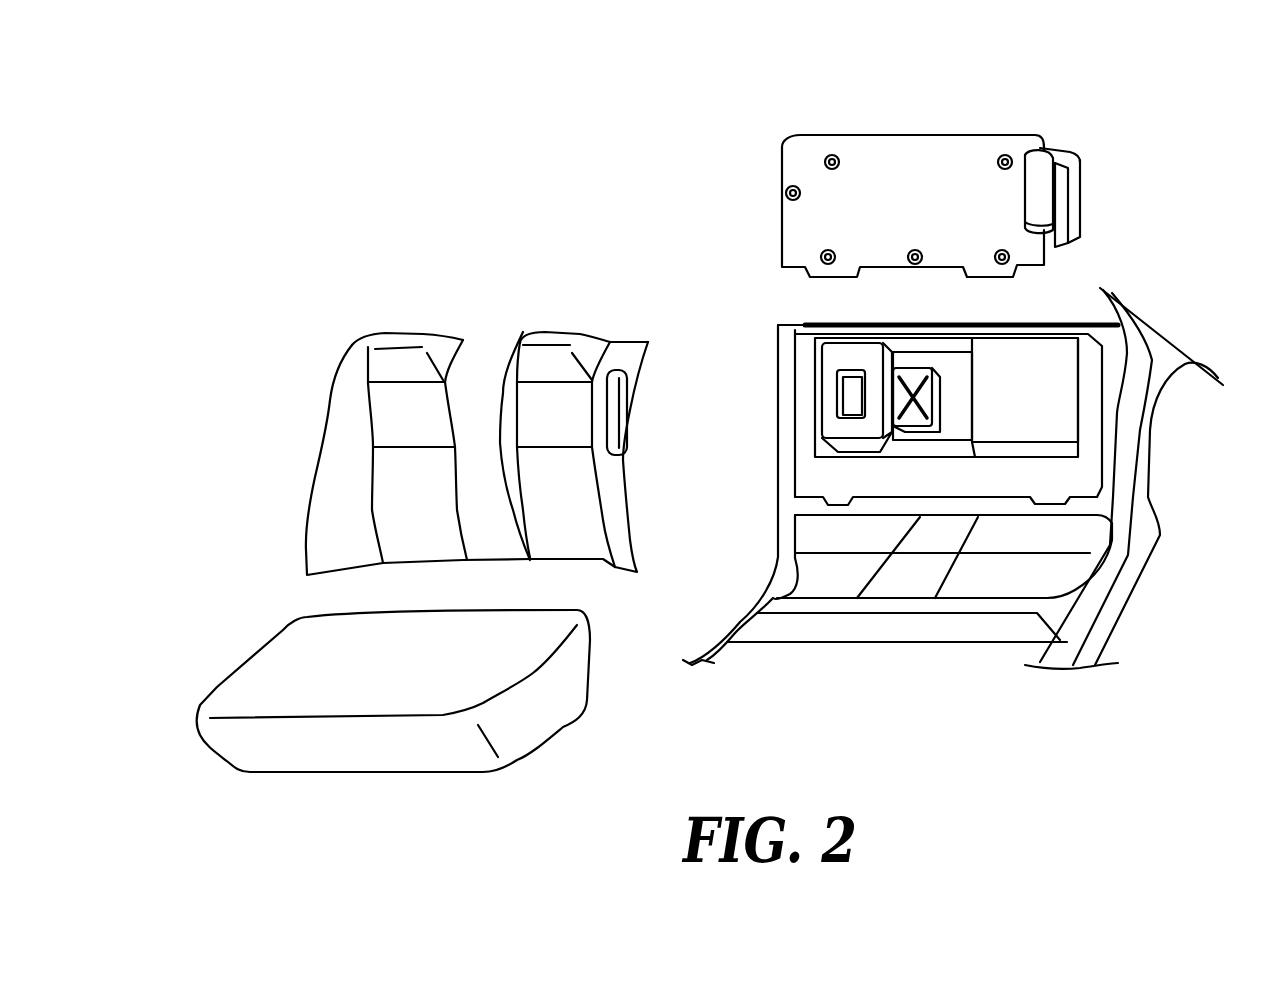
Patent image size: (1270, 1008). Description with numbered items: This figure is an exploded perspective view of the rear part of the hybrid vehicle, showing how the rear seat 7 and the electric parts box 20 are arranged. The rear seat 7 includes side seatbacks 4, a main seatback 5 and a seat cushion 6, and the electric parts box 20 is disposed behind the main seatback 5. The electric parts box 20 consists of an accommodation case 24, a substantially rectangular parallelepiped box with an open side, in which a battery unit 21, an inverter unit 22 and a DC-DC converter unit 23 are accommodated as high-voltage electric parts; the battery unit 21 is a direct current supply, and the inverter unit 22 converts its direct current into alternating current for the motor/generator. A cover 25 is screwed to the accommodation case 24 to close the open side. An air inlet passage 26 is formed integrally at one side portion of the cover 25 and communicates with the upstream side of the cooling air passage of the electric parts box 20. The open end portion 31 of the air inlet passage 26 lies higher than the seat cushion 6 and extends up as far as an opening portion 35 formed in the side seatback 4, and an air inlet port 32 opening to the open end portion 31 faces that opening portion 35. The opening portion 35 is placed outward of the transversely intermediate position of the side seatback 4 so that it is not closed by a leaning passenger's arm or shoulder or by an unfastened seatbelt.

The side seatback 4 is at (333, 463).
The main seatback 5 is at (400, 508).
The seat cushion 6 is at (322, 647).
The rear seat 7 is at (183, 465).
The electric parts box 20 is at (1088, 413).
The battery unit 21 is at (1033, 360).
The inverter unit 22 is at (837, 358).
The DC-DC converter unit 23 is at (910, 373).
The accommodation case 24 is at (957, 455).
The cover 25 is at (912, 158).
The air inlet passage 26 is at (1050, 152).
The open end portion 31 is at (1073, 165).
The air inlet port 32 is at (1060, 218).
The opening portion 35 is at (618, 403).